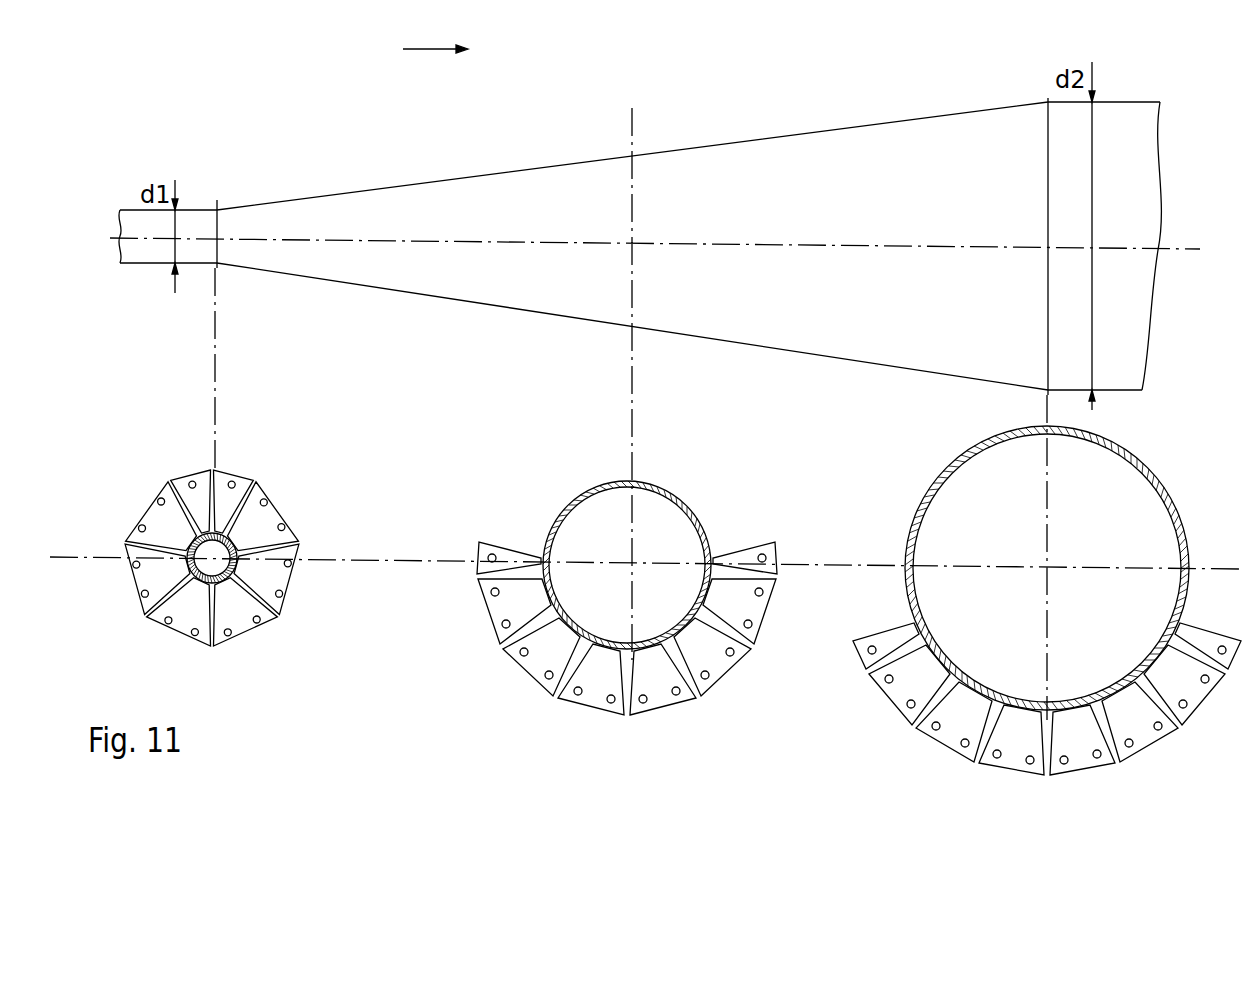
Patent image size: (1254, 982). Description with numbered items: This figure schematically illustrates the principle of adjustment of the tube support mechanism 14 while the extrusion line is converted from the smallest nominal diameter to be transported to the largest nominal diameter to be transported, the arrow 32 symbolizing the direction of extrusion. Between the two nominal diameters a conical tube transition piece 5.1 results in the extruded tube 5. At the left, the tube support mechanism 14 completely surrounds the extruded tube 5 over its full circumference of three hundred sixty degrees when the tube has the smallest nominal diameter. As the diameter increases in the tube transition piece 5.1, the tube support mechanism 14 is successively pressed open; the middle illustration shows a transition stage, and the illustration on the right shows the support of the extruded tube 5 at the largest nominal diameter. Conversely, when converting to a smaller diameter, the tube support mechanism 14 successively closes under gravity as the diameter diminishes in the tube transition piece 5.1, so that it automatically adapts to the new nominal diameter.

The extruded tube 5 is at (197, 208).
The tube transition piece 5.1 is at (731, 166).
The tube support mechanism 14 is at (289, 486).
The arrow 32 is at (435, 37).